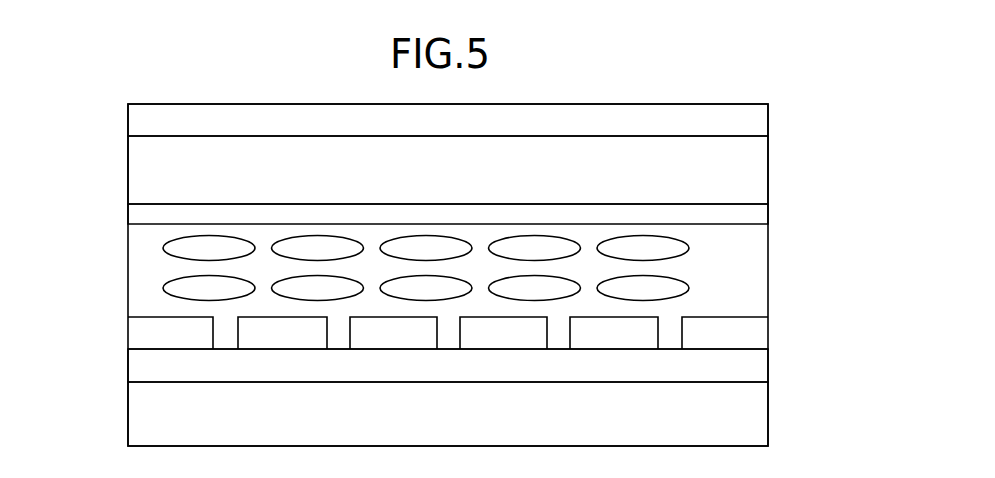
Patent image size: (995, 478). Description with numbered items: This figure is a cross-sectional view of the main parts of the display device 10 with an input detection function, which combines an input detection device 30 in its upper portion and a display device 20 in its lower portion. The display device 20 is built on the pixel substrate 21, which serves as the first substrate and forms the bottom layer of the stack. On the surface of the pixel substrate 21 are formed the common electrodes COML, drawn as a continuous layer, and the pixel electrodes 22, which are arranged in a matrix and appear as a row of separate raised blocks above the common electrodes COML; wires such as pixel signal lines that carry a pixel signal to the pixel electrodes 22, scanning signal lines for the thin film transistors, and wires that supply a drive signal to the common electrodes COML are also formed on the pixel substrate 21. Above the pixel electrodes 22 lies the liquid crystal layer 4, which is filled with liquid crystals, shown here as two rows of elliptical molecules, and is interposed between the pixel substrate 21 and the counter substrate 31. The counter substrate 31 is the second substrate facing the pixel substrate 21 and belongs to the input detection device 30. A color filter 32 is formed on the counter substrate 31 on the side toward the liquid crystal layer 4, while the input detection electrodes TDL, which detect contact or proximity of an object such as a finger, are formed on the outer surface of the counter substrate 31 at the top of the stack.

The display device with an input detection function 10 is at (72, 104).
The input detection device 30 is at (124, 104).
The input detection electrodes TDL is at (760, 123).
The counter substrate 31 is at (760, 169).
The color filter 32 is at (760, 216).
The liquid crystal layer 4 is at (774, 227).
The display device 20 is at (124, 316).
The pixel electrodes 22 is at (760, 336).
The common electrodes COML is at (760, 368).
The pixel substrate 21 is at (760, 413).